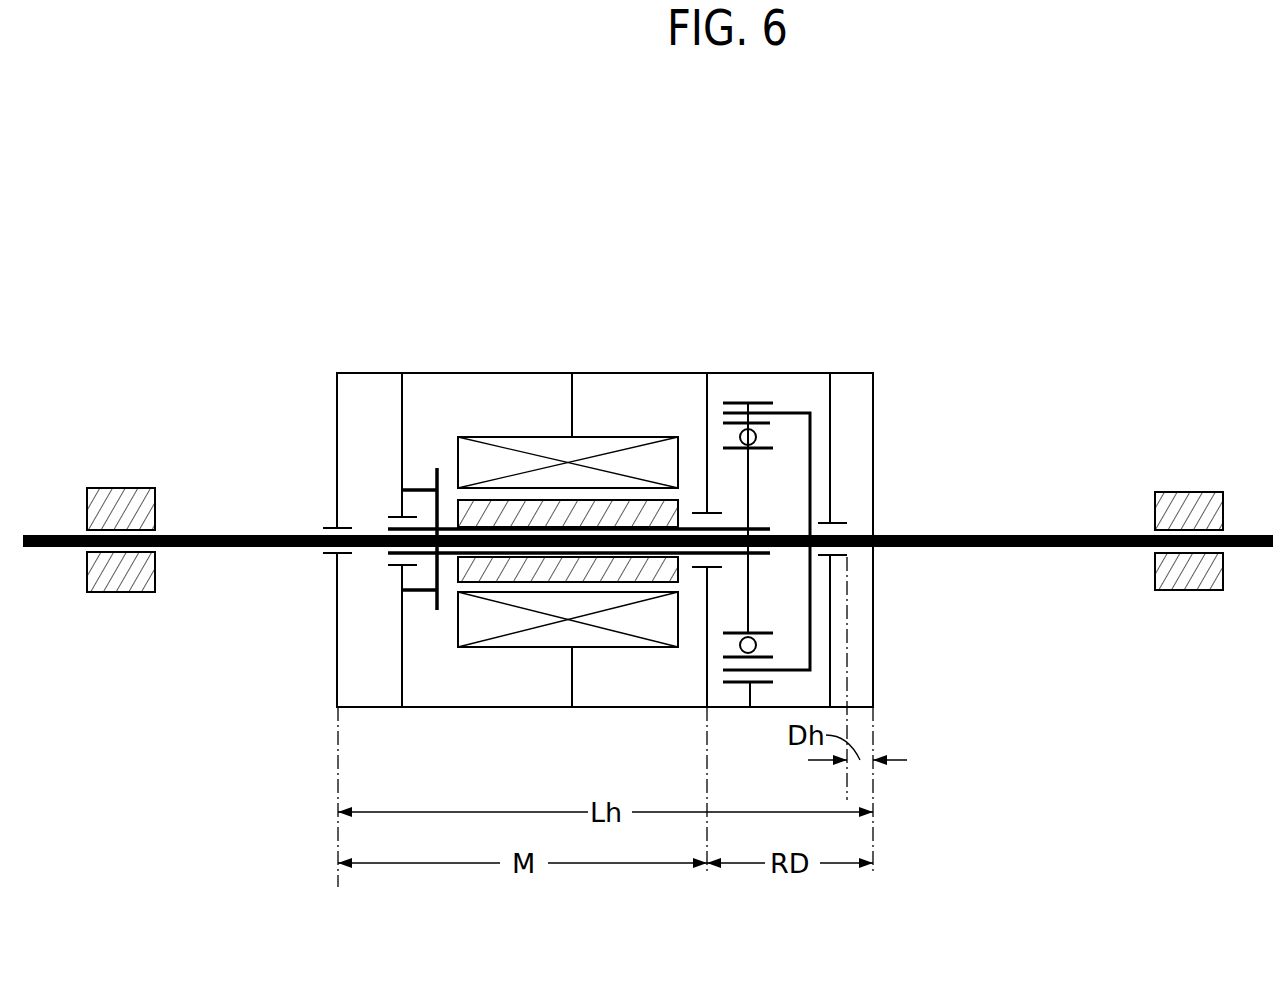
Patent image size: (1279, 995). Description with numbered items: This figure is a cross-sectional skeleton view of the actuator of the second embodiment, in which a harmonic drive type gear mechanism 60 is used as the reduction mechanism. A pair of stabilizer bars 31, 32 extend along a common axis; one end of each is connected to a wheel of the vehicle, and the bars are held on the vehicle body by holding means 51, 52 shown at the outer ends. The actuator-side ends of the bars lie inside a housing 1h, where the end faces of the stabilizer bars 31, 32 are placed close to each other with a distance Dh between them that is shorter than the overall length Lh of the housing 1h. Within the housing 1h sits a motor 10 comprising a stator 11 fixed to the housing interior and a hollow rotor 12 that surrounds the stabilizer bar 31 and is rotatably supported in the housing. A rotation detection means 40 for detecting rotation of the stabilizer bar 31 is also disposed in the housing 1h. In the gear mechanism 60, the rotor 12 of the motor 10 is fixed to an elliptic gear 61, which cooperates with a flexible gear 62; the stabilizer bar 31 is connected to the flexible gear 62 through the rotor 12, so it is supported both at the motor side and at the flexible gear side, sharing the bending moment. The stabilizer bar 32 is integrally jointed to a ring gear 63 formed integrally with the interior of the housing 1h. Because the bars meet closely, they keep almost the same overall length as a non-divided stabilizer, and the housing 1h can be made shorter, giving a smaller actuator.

The housing 1h is at (610, 709).
The motor 10 is at (579, 543).
The stator 11 is at (510, 440).
The rotor 12 is at (457, 493).
The stabilizer bar 31 is at (232, 535).
The stabilizer bar 32 is at (1000, 535).
The rotation detection means 40 is at (445, 707).
The holding means 51 is at (117, 488).
The holding means 52 is at (1185, 492).
The harmonic drive type gear mechanism 60 is at (784, 524).
The elliptic gear 61 is at (727, 440).
The flexible gear 62 is at (790, 413).
The ring gear 63 is at (745, 400).